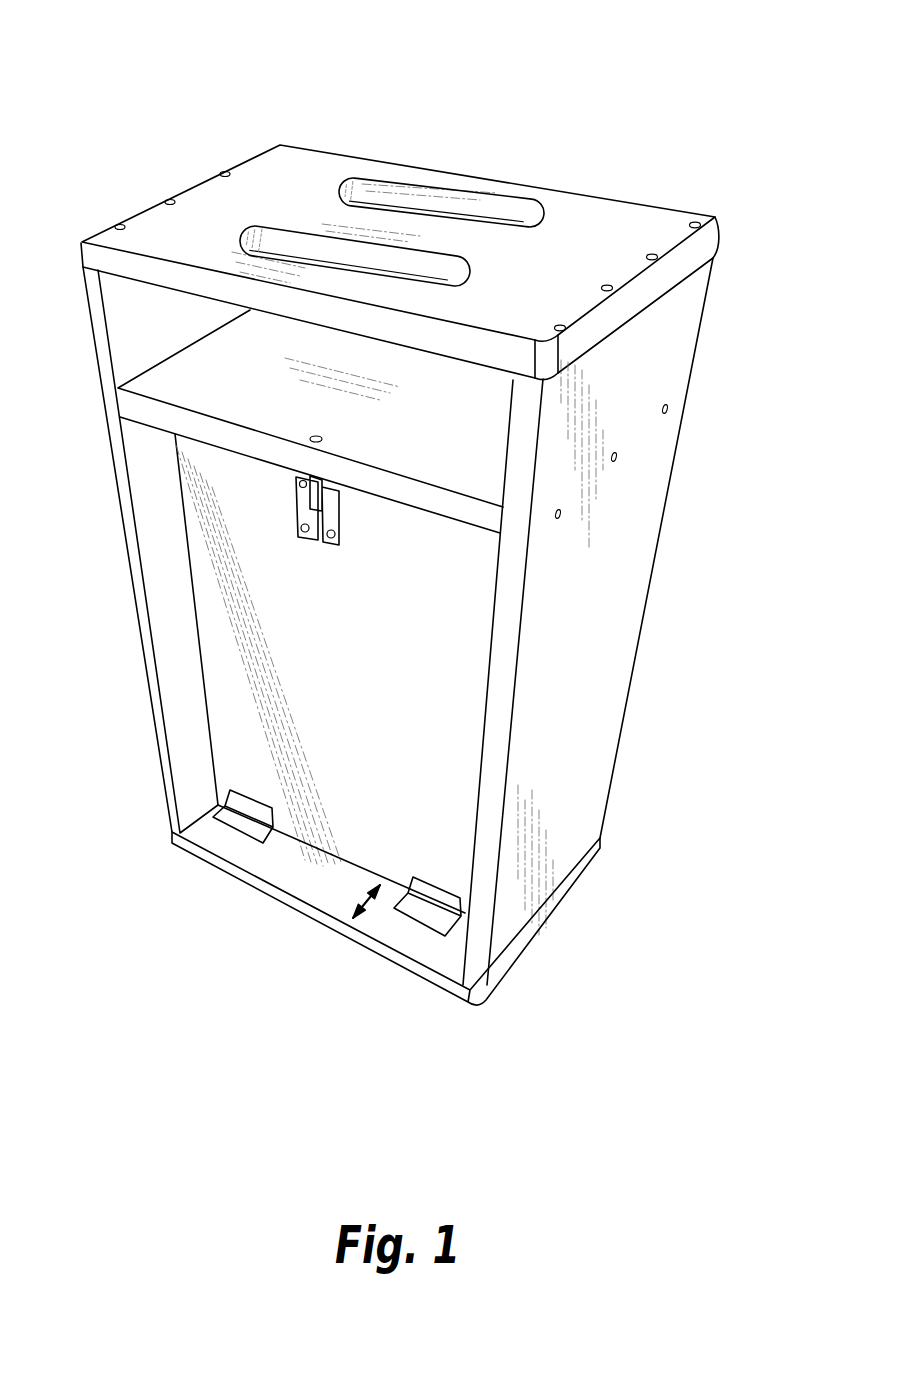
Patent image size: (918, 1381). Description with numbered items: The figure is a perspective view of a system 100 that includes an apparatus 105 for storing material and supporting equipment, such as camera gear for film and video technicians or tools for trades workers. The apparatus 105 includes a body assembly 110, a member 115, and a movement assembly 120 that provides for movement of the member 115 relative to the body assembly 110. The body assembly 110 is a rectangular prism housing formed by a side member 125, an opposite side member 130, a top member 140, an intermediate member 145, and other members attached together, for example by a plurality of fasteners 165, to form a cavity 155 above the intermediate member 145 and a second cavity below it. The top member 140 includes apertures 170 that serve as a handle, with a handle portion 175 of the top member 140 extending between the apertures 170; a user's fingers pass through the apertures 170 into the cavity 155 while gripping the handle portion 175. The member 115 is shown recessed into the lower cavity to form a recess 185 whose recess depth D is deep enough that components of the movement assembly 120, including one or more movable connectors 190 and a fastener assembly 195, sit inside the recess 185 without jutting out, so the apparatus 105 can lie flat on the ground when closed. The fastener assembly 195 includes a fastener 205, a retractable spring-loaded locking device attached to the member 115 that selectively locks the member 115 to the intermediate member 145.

The system 100 is at (600, 112).
The apparatus 105 is at (634, 158).
The body assembly 110 is at (704, 198).
The member 115 is at (225, 643).
The movement assembly 120 is at (200, 876).
The side member 125 is at (157, 510).
The side member 130 is at (590, 677).
The top member 140 is at (313, 163).
The intermediate member 145 is at (163, 383).
The cavity 155 is at (478, 451).
The fasteners 165 is at (716, 221).
The apertures 170 is at (460, 216).
The handle portion 175 is at (350, 222).
The recess 185 is at (362, 812).
The movable connectors 190 is at (259, 851).
The fastener assembly 195 is at (346, 562).
The fastener 205 is at (303, 487).
The recess depth D is at (364, 912).